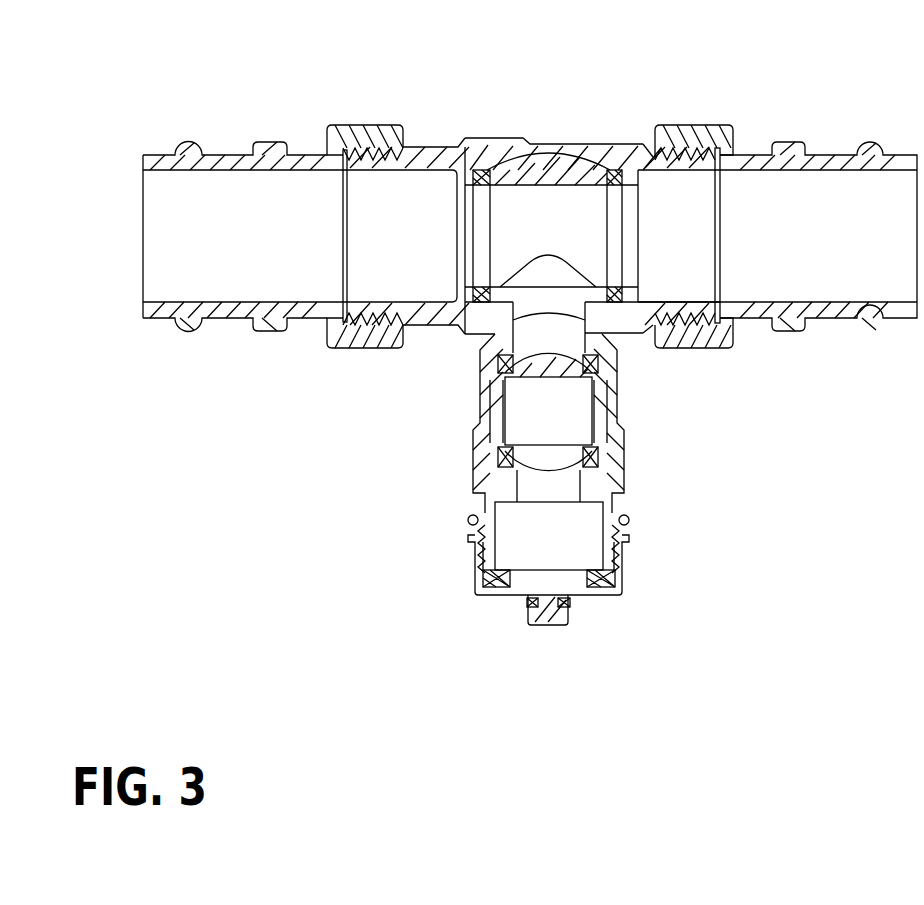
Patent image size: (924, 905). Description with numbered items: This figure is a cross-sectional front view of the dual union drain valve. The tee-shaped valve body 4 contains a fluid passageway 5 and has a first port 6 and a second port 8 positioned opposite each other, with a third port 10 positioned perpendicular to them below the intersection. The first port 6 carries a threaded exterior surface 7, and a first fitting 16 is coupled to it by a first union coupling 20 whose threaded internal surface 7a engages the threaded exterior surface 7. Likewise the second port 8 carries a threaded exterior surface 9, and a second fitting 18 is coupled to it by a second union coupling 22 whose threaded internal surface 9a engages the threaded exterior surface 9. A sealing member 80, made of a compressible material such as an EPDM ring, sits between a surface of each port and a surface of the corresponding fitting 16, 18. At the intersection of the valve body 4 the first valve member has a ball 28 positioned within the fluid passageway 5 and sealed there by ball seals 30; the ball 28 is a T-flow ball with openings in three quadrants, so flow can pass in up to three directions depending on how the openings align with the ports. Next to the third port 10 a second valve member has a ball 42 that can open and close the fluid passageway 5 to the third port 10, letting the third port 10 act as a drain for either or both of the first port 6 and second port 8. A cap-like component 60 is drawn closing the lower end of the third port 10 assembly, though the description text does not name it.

The valve body 4 is at (556, 152).
The fluid passageway 5 is at (688, 242).
The first port 6 is at (420, 150).
The threaded exterior surface 7 is at (370, 298).
The threaded internal surface 7a is at (360, 320).
The second port 8 is at (670, 155).
The threaded exterior surface 9 is at (723, 297).
The threaded internal surface 9a is at (688, 340).
The third port 10 is at (617, 470).
The first fitting 16 is at (190, 143).
The second fitting 18 is at (878, 150).
The first union coupling 20 is at (350, 135).
The second union coupling 22 is at (702, 165).
The ball 28 is at (537, 178).
The ball seals 30 is at (610, 158).
The ball 42 is at (567, 370).
The end cap 60 is at (622, 585).
The sealing member 80 is at (730, 153).